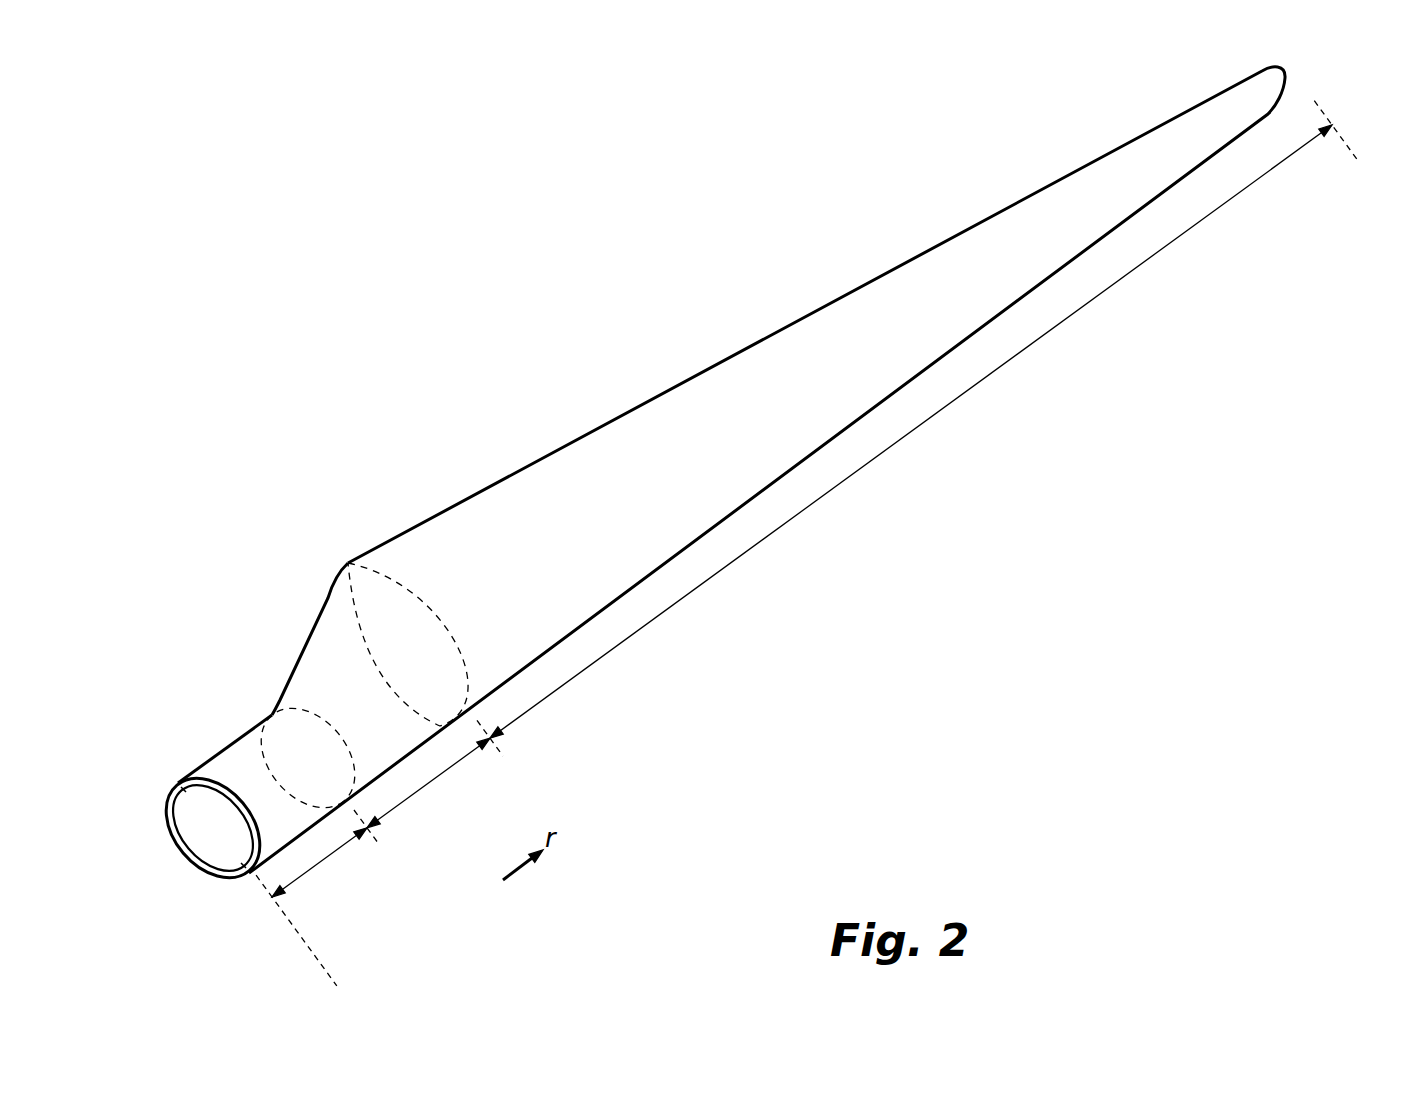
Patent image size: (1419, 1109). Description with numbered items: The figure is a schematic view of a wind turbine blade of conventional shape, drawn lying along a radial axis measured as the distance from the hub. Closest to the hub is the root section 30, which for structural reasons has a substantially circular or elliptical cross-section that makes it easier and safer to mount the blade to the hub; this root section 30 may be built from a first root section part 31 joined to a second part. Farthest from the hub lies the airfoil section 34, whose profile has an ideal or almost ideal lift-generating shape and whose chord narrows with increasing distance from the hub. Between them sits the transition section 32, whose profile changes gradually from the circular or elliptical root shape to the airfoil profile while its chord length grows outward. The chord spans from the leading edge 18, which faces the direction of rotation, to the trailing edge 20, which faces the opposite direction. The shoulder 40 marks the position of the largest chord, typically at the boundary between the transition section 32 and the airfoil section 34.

The leading edge 18 is at (948, 352).
The trailing edge 20 is at (957, 232).
The root section 30 is at (323, 862).
The first root section part 31 is at (172, 805).
The transition section 32 is at (430, 783).
The airfoil section 34 is at (828, 495).
The shoulder 40 is at (348, 563).